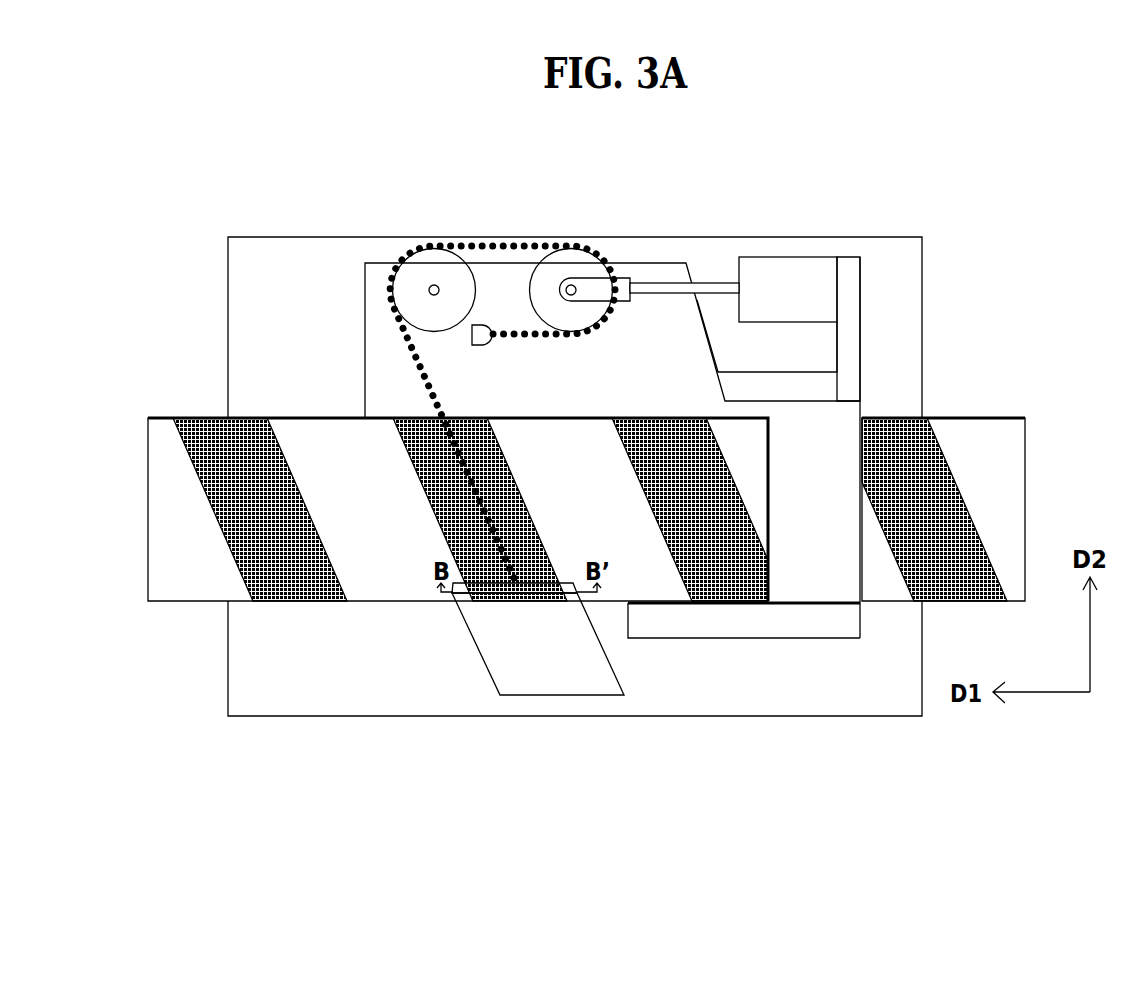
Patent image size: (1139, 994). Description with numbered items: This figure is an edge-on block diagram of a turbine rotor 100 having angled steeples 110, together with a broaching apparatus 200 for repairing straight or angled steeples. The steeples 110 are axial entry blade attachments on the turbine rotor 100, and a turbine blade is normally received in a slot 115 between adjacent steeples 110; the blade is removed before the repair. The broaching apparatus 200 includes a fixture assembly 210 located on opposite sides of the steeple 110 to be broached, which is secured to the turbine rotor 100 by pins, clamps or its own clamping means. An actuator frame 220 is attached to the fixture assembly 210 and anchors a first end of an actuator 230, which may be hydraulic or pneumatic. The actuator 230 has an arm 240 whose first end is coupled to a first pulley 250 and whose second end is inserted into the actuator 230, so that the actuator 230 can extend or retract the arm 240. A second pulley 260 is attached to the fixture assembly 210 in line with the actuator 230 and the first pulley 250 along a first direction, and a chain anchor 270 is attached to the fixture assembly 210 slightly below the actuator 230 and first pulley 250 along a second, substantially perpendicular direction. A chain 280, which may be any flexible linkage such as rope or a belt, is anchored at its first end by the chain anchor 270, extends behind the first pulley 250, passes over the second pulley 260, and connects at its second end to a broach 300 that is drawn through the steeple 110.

The turbine rotor 100 is at (234, 207).
The steeple 110 is at (397, 577).
The slot 115 is at (297, 575).
The broaching apparatus 200 is at (887, 327).
The fixture assembly 210 is at (818, 640).
The actuator frame 220 is at (847, 257).
The actuator 230 is at (772, 257).
The arm 240 is at (708, 283).
The first pulley 250 is at (575, 266).
The second pulley 260 is at (435, 263).
The chain anchor 270 is at (483, 322).
The chain 280 is at (510, 245).
The broach 300 is at (563, 695).